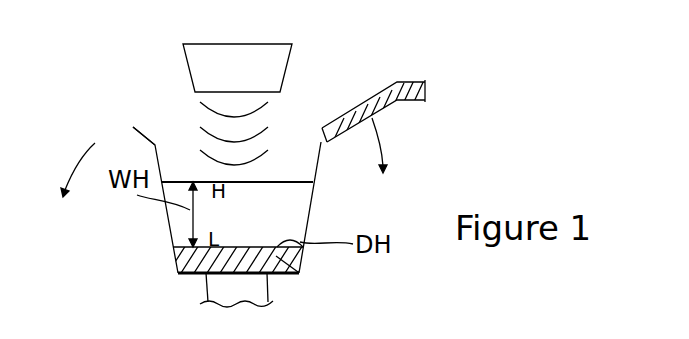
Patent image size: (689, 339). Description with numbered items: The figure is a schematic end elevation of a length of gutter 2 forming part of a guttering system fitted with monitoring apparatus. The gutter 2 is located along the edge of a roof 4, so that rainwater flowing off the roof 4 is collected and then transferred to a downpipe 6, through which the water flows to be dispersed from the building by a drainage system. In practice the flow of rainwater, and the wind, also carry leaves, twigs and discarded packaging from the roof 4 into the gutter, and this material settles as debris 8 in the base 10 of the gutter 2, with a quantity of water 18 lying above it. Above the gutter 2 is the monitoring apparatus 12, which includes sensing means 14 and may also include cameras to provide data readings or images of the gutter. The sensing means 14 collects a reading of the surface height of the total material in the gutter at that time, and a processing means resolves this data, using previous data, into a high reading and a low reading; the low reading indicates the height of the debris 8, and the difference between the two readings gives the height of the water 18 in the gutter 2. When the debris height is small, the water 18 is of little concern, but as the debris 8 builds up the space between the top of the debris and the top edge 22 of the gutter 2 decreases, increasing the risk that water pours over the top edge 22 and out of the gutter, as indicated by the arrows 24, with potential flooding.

The gutter 2 is at (300, 260).
The roof 4 is at (418, 100).
The downpipe 6 is at (220, 282).
The debris 8 is at (283, 258).
The base of the gutter 10 is at (178, 264).
The monitoring apparatus 12 is at (288, 63).
The sensing means 14 is at (223, 92).
The water 18 is at (290, 203).
The top edge of the gutter 22 is at (133, 127).
The arrows 24 is at (73, 163).